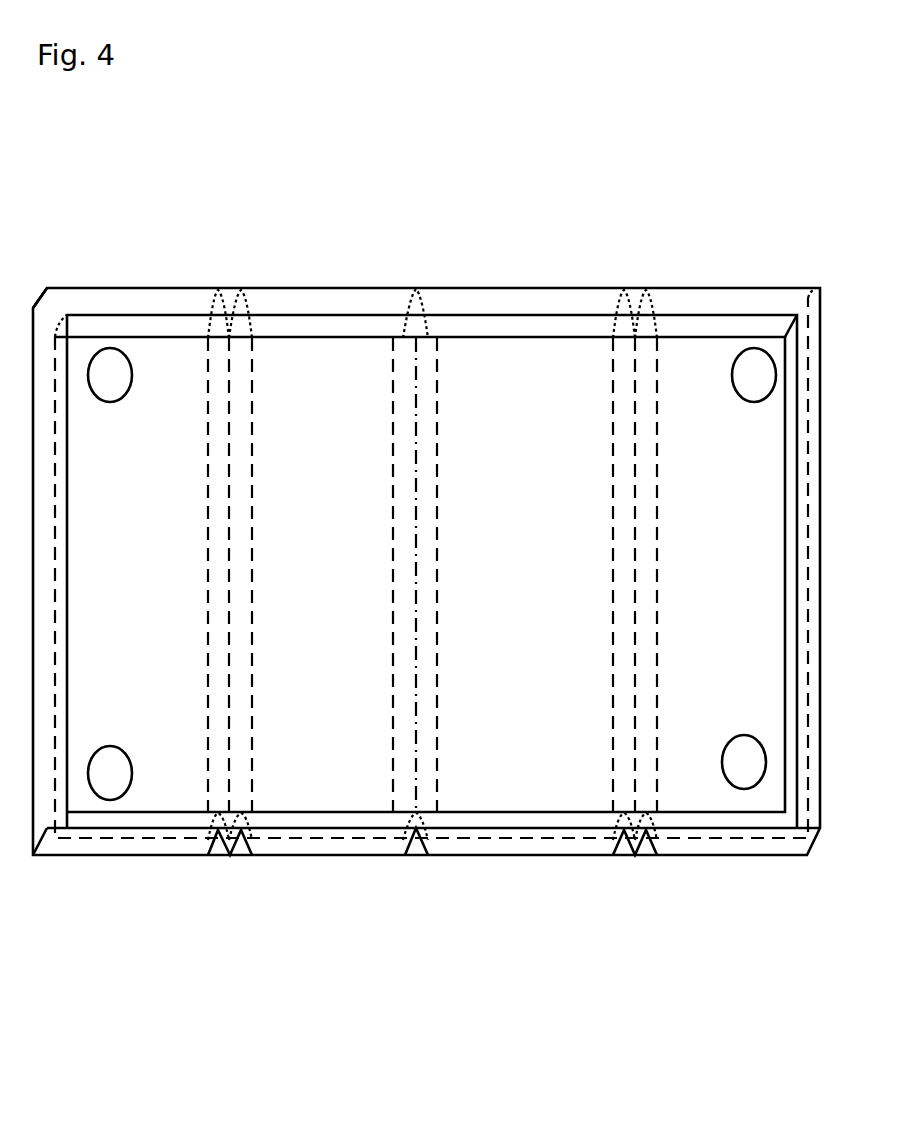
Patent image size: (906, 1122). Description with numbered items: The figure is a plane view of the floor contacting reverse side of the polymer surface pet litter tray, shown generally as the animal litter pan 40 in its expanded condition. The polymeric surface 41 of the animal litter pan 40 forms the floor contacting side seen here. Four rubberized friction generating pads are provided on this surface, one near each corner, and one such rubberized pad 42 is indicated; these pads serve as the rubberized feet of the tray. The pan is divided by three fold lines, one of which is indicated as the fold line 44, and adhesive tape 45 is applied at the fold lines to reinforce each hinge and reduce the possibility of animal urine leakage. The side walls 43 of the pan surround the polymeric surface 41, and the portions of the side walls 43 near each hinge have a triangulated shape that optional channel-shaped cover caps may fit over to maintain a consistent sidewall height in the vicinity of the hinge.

The animal litter pan 40 is at (426, 586).
The polymeric surface 41 is at (295, 757).
The rubberized friction generating pad 42 is at (109, 790).
The side walls 43 is at (77, 820).
The fold line 44 is at (415, 702).
The adhesive tape 45 is at (438, 645).